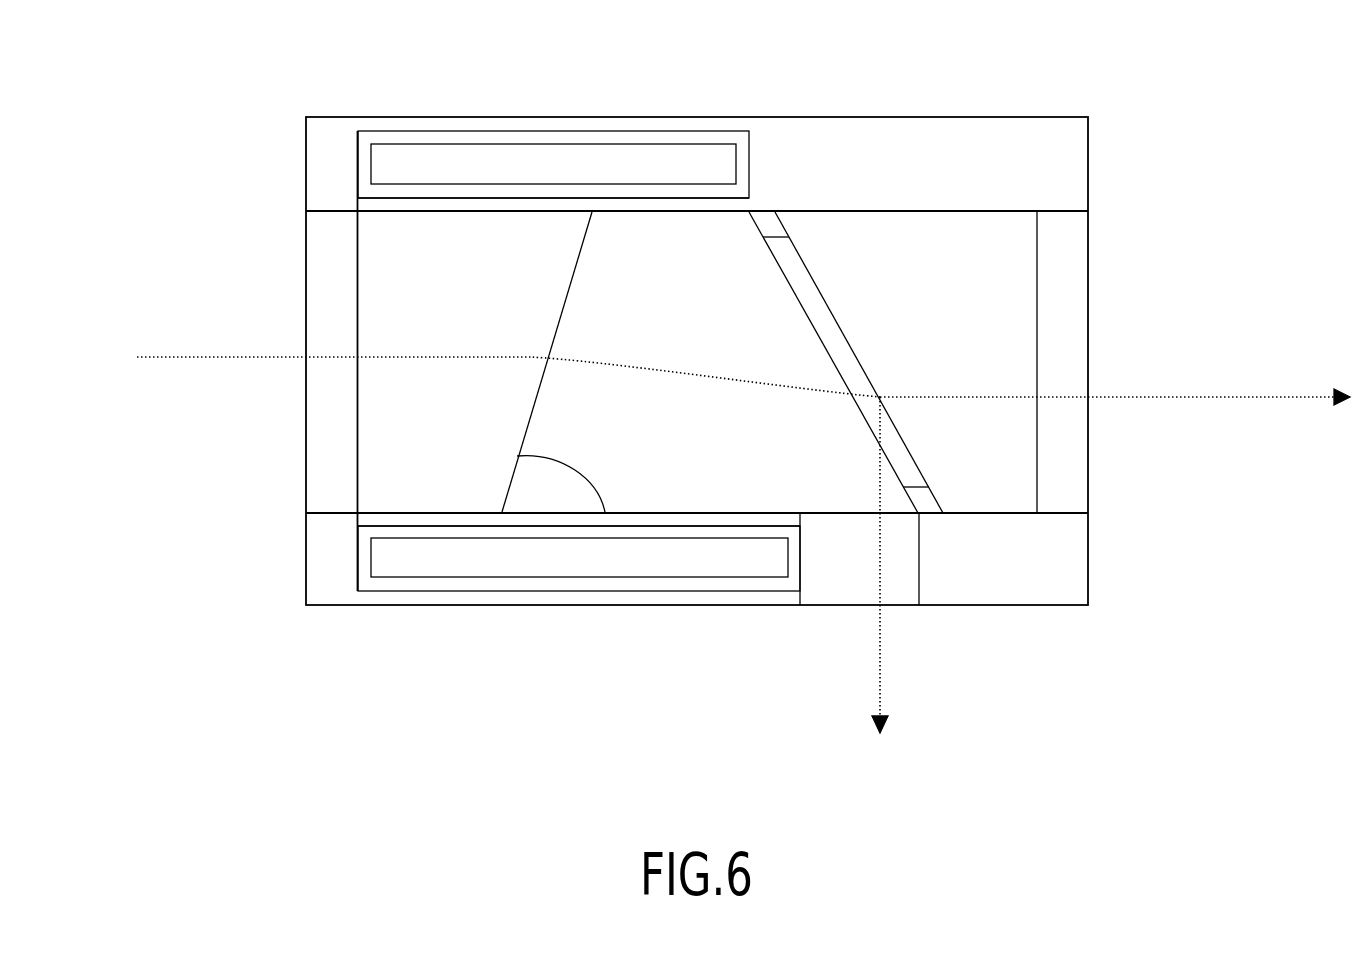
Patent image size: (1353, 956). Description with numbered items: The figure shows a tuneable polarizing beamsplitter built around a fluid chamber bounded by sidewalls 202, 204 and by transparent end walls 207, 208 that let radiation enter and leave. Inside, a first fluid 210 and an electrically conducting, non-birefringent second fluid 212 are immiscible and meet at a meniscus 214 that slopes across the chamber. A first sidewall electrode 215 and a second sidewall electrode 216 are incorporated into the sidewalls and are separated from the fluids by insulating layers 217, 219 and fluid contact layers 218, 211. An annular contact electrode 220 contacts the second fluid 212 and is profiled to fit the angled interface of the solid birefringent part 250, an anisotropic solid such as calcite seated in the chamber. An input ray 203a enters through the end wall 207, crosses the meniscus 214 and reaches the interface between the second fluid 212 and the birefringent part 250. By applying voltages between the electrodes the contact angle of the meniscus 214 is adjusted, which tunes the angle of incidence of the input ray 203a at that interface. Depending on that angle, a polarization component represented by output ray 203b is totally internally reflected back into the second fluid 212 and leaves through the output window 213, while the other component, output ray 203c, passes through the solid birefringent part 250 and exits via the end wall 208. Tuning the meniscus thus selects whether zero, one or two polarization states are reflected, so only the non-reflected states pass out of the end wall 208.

The sidewall 202 is at (332, 183).
The input ray 203a is at (137, 357).
The first output ray 203b is at (880, 735).
The second output ray 203c is at (1338, 390).
The sidewall 204 is at (572, 518).
The end wall 207 is at (303, 365).
The end wall 208 is at (1088, 477).
The first fluid 210 is at (437, 415).
The fluid contact layer 211 is at (434, 203).
The second fluid 212 is at (525, 238).
The output window 213 is at (852, 583).
The meniscus 214 is at (592, 212).
The first sidewall electrode 215 is at (457, 565).
The second sidewall electrode 216 is at (496, 162).
The insulating layer 217 is at (400, 532).
The fluid contact layer 218 is at (510, 518).
The insulating layer 219 is at (402, 188).
The annular contact electrode 220 is at (766, 223).
The solid birefringent part 250 is at (853, 263).